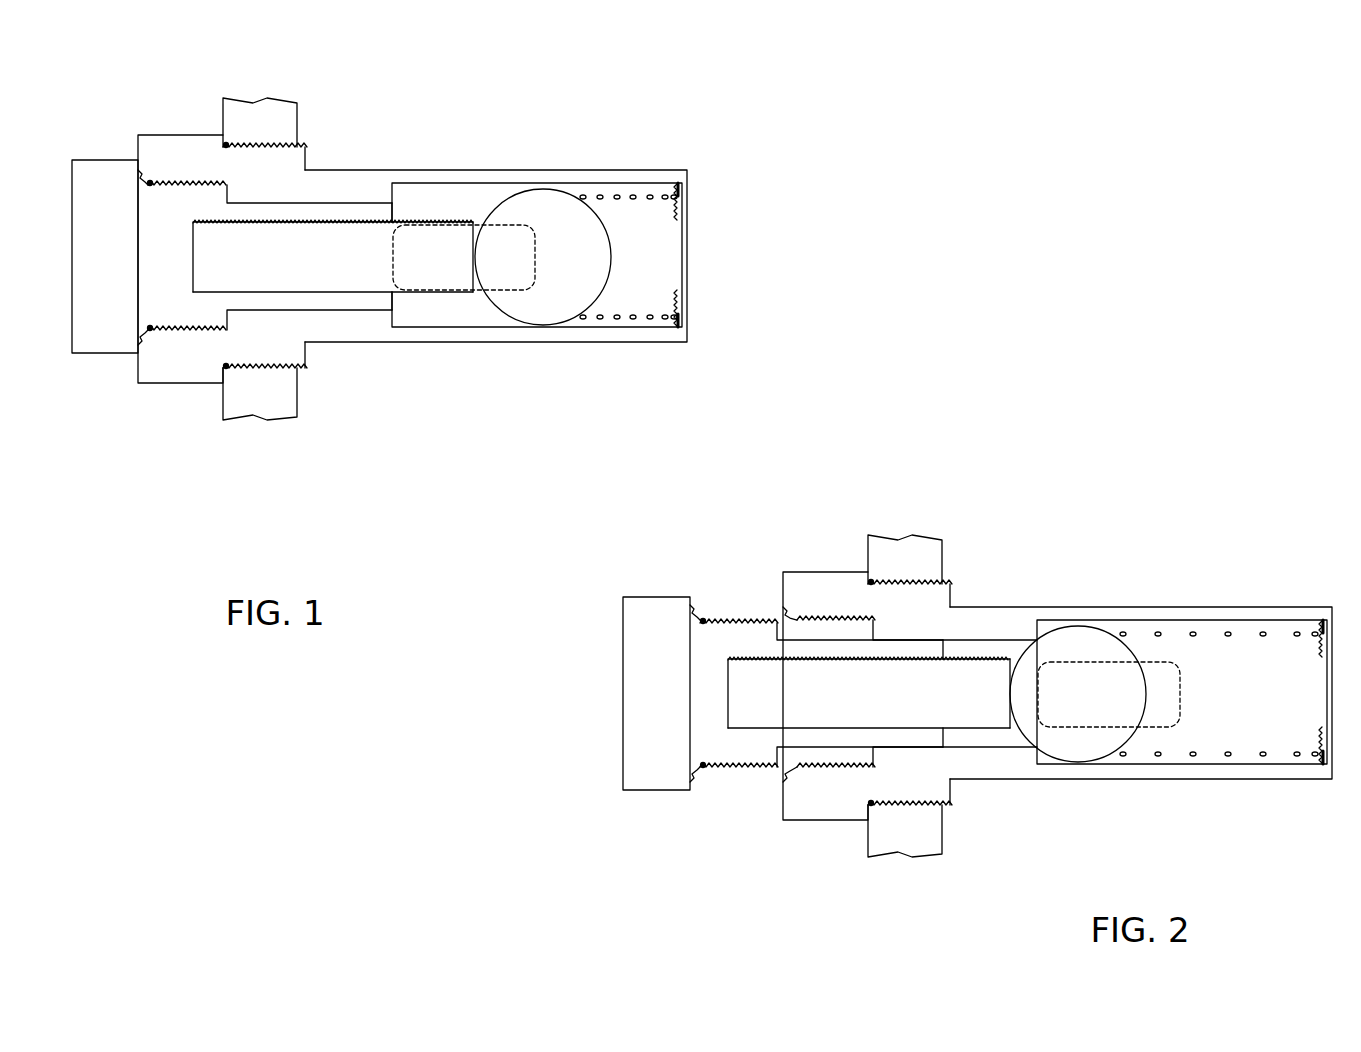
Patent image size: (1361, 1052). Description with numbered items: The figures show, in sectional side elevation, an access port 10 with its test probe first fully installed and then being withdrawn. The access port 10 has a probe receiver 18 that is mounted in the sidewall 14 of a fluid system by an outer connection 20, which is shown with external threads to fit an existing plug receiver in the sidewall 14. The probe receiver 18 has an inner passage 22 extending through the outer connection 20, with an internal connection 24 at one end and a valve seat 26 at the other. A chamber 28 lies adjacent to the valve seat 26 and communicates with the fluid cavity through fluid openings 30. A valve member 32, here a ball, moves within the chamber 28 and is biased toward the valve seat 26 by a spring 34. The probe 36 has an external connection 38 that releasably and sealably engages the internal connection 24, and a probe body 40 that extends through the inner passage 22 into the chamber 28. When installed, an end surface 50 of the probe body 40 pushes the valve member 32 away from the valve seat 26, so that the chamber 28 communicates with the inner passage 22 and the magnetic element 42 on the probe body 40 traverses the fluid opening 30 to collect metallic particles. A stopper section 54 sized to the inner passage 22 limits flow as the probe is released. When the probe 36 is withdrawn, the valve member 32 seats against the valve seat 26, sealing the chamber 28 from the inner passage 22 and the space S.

In FIG. 1, the access port 10 is at (728, 140).
In FIG. 2, the access port 10 is at (1087, 497).
In FIG. 1, the sidewall 14 is at (265, 400).
In FIG. 2, the sidewall 14 is at (913, 842).
In FIG. 1, the probe receiver 18 is at (291, 150).
In FIG. 2, the probe receiver 18 is at (932, 598).
In FIG. 1, the outer connection 20 is at (253, 143).
In FIG. 2, the outer connection 20 is at (905, 582).
In FIG. 1, the inner passage 22 is at (338, 202).
In FIG. 2, the inner passage 22 is at (987, 637).
In FIG. 1, the internal connection 24 is at (167, 333).
In FIG. 2, the internal connection 24 is at (838, 768).
In FIG. 1, the valve seat 26 is at (385, 308).
In FIG. 2, the valve seat 26 is at (1030, 745).
In FIG. 1, the chamber 28 is at (627, 285).
In FIG. 2, the chamber 28 is at (1285, 705).
In FIG. 1, the fluid openings 30 is at (492, 285).
In FIG. 2, the fluid openings 30 is at (1173, 697).
In FIG. 1, the valve member 32 is at (546, 285).
In FIG. 2, the valve member 32 is at (1082, 687).
In FIG. 1, the spring 34 is at (642, 193).
In FIG. 2, the spring 34 is at (1225, 632).
In FIG. 1, the probe 36 is at (112, 197).
In FIG. 2, the probe 36 is at (667, 630).
In FIG. 1, the external connection 38 is at (138, 378).
In FIG. 2, the external connection 38 is at (723, 767).
In FIG. 1, the probe body 40 is at (375, 203).
In FIG. 2, the probe body 40 is at (912, 747).
In FIG. 1, the magnetic element 42 is at (415, 263).
In FIG. 2, the magnetic element 42 is at (975, 727).
In FIG. 1, the end surface 50 is at (472, 248).
In FIG. 2, the end surface 50 is at (1013, 647).
In FIG. 1, the stopper section 54 is at (352, 300).
In FIG. 2, the stopper section 54 is at (893, 733).
In FIG. 2, the space S is at (998, 645).